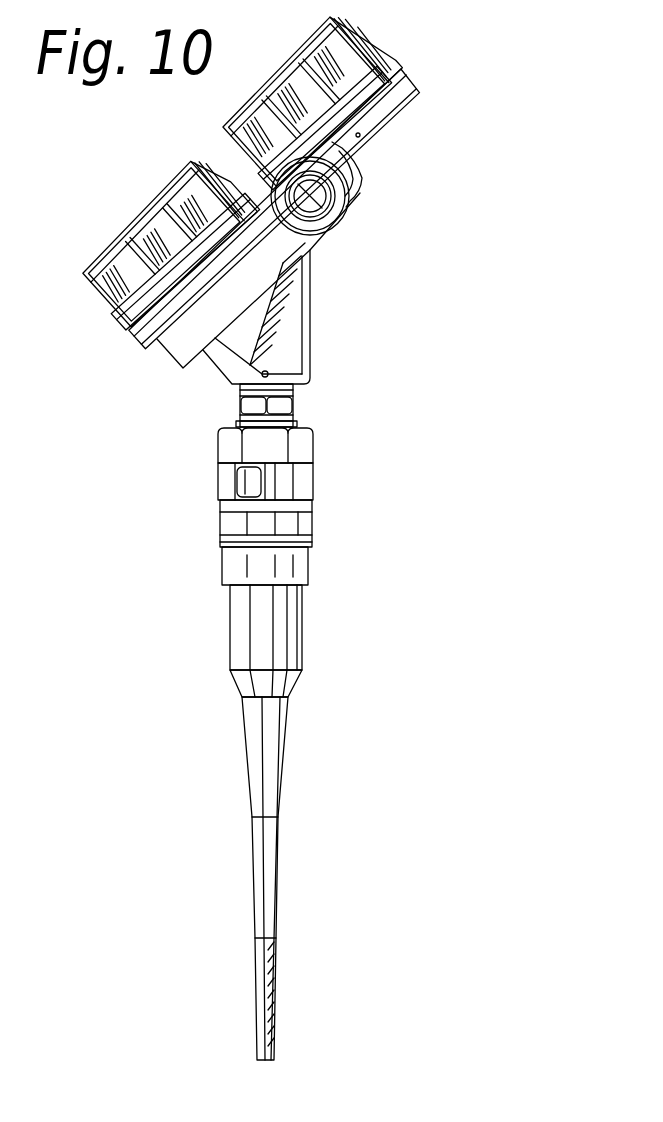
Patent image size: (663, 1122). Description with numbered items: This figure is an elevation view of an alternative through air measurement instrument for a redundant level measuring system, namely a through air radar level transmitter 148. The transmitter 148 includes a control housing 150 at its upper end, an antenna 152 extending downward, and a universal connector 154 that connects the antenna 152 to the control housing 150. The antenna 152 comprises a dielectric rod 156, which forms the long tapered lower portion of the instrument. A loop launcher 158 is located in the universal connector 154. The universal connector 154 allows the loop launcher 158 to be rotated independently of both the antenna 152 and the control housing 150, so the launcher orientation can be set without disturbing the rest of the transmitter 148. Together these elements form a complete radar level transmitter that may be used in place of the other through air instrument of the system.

The through air radar level transmitter 148 is at (447, 140).
The control housing 150 is at (360, 192).
The antenna 152 is at (310, 622).
The universal connector 154 is at (310, 484).
The dielectric rod 156 is at (262, 757).
The loop launcher 158 is at (222, 480).